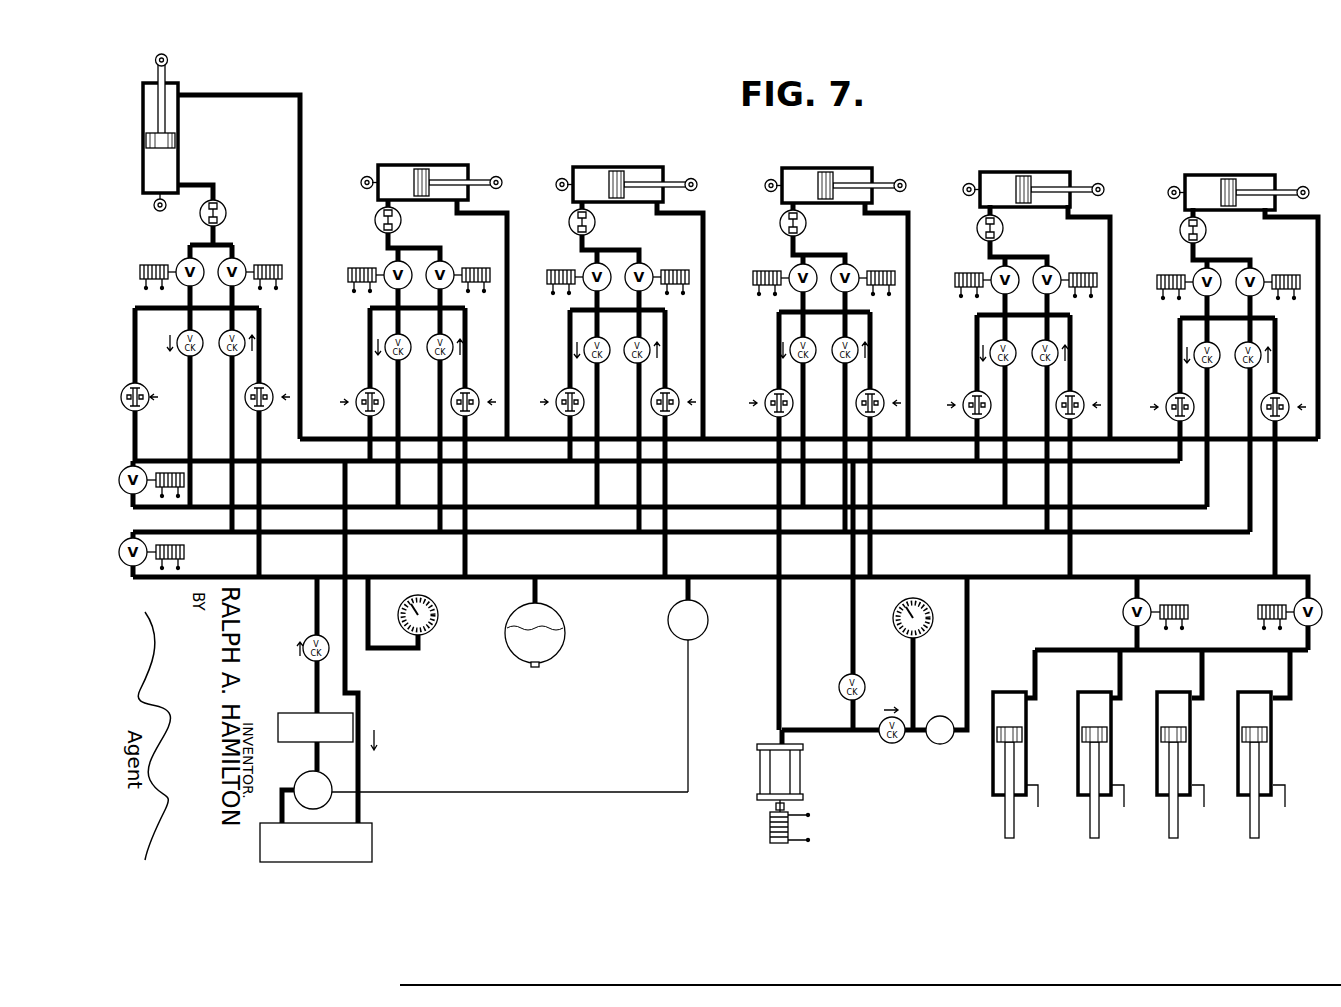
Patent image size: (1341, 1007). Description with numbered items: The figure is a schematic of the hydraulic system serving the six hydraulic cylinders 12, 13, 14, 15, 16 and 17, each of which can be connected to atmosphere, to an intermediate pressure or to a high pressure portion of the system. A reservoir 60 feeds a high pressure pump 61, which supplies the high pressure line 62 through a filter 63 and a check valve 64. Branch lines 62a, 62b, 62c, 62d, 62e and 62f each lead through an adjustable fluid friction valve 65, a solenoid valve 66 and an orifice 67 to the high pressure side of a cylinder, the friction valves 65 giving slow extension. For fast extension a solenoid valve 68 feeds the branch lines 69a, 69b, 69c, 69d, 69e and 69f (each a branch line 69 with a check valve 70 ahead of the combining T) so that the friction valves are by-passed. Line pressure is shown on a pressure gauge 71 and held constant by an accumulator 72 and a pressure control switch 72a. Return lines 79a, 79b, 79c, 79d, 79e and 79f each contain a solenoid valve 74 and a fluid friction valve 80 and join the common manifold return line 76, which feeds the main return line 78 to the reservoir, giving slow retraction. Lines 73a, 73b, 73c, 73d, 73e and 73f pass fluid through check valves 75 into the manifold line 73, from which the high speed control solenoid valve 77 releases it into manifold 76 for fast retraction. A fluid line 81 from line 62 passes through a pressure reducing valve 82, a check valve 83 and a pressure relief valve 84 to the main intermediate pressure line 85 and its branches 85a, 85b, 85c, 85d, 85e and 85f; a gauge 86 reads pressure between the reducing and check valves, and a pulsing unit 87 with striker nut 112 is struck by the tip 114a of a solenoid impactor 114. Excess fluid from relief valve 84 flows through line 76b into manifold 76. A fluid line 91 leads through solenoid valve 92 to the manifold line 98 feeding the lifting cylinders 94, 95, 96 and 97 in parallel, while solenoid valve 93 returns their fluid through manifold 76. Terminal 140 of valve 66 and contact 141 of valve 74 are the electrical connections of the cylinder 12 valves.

The hydraulic cylinder 12 is at (1238, 176).
The hydraulic cylinder 13 is at (1033, 173).
The hydraulic cylinder 14 is at (835, 170).
The hydraulic cylinder 15 is at (431, 166).
The hydraulic cylinder 16 is at (626, 168).
The hydraulic cylinder 17 is at (178, 132).
The hydraulic fluid reservoir 60 is at (337, 841).
The high pressure pump 61 is at (484, 782).
The high pressure line 62 is at (720, 600).
The branch line 62a is at (1253, 447).
The branch line 62b is at (1045, 446).
The branch line 62c is at (890, 444).
The branch line 62d is at (636, 443).
The branch line 62e is at (438, 442).
The branch line 62f is at (235, 442).
The filter 63 is at (315, 714).
The check valve 64 is at (306, 645).
The adjustable fluid friction valve 65 is at (776, 408).
The solenoid valve 66 is at (752, 267).
The orifice 67 is at (714, 233).
The solenoid valve 68 is at (143, 544).
The branch line 69 is at (691, 520).
The branch line 69a is at (1230, 407).
The branch line 69b is at (1022, 406).
The branch line 69c is at (821, 405).
The branch line 69d is at (612, 404).
The branch line 69e is at (418, 403).
The branch line 69f is at (212, 402).
The check valve 70 is at (738, 340).
The pressure gauge 71 is at (417, 612).
The hydraulic accumulator 72 is at (549, 622).
The pressure control switch 72a is at (705, 684).
The common manifold line 73 is at (670, 494).
The branch fluid return line 73a is at (1225, 394).
The branch fluid return line 73b is at (1023, 393).
The branch fluid return line 73c is at (821, 392).
The branch fluid return line 73d is at (616, 392).
The branch fluid return line 73e is at (416, 391).
The branch fluid return line 73f is at (207, 389).
The solenoid valve 74 is at (680, 267).
The check valve 75 is at (692, 351).
The common manifold return line 76 is at (656, 471).
The line 76b is at (830, 595).
The high speed control solenoid valve 77 is at (145, 474).
The main return line 78 is at (385, 642).
The branch fluid return line 79a is at (1204, 389).
The branch fluid return line 79b is at (1002, 388).
The branch fluid return line 79c is at (805, 521).
The branch fluid return line 79d is at (599, 385).
The branch fluid return line 79e is at (393, 384).
The branch fluid return line 79f is at (197, 384).
The fluid friction valve 80 is at (657, 407).
The fluid line 81 is at (897, 653).
The pressure reducing valve 82 is at (940, 745).
The check valve 83 is at (892, 740).
The pressure relief valve 84 is at (838, 674).
The main intermediate pressure line 85 is at (809, 446).
The branch line 85a is at (1291, 323).
The branch line 85b is at (1086, 322).
The branch line 85c is at (885, 321).
The branch line 85d is at (679, 320).
The branch line 85e is at (482, 319).
The branch line 85f is at (239, 267).
The pressure indicating gauge 86 is at (926, 660).
The pulsing unit 87 is at (765, 765).
The fluid line 91 is at (1296, 553).
The solenoid valve 92 is at (1290, 607).
The solenoid valve 93 is at (1136, 613).
The hydraulic cylinder 94 is at (1270, 765).
The hydraulic cylinder 95 is at (1189, 765).
The hydraulic cylinder 96 is at (1110, 765).
The hydraulic cylinder 97 is at (1027, 765).
The manifold line 98 is at (1166, 660).
The striker nut 112 is at (754, 805).
The solenoid impactor 114 is at (811, 827).
The tip 114a is at (829, 805).
The terminal 140 is at (1292, 300).
The contact 141 is at (1155, 300).